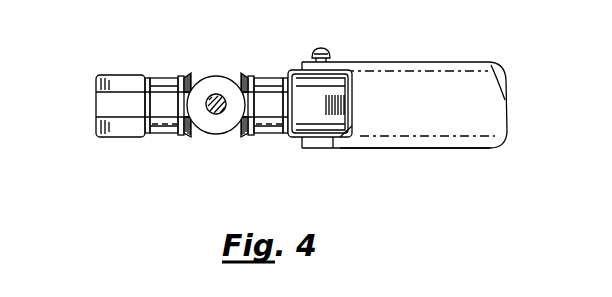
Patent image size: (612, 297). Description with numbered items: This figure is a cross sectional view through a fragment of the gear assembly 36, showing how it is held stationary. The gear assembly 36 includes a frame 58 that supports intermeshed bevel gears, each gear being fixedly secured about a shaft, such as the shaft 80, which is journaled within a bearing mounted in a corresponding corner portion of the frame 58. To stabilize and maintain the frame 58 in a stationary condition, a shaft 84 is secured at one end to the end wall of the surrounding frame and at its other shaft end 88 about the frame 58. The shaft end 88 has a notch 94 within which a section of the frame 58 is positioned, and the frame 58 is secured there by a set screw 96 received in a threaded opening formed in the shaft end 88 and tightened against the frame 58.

The gear assembly 36 is at (128, 75).
The frame 58 is at (163, 103).
The shaft 80 is at (217, 115).
The shaft 84 is at (434, 72).
The shaft end 88 is at (392, 148).
The notch 94 is at (350, 118).
The set screw 96 is at (323, 46).